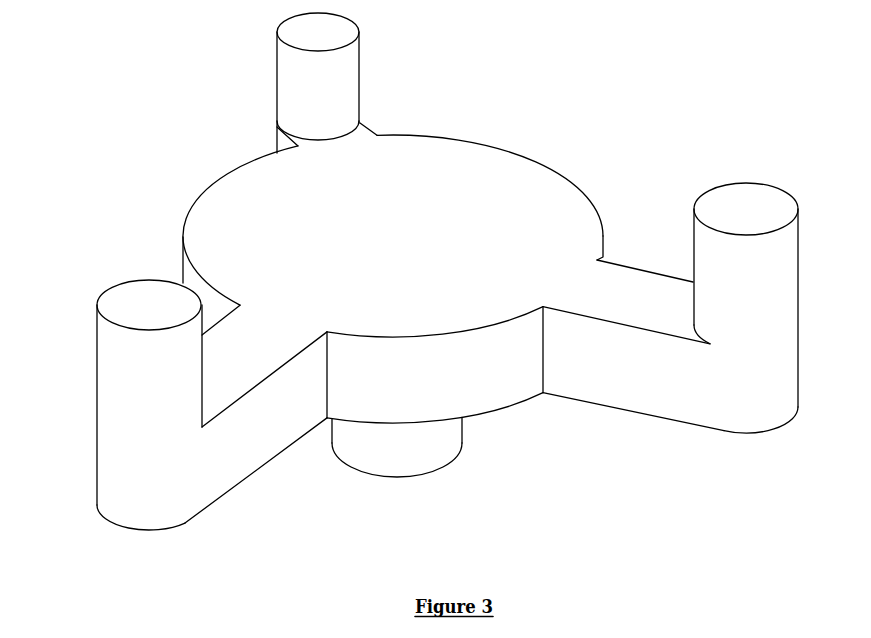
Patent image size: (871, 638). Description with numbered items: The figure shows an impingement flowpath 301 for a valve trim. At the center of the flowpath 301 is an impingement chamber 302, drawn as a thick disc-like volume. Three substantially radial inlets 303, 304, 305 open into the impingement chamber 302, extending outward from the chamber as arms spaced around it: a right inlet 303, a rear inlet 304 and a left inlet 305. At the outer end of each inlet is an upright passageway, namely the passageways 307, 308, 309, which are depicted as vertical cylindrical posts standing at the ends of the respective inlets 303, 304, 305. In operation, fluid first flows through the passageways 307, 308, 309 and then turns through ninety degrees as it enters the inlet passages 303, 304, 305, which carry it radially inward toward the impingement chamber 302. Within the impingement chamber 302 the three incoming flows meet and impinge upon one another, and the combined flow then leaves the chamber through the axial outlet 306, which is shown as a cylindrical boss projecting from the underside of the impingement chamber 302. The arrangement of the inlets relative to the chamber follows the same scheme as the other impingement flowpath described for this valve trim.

The flowpath 301 is at (596, 66).
The impingement chamber 302 is at (240, 210).
The radial inlet 303 is at (640, 280).
The radial inlet 304 is at (371, 115).
The radial inlet 305 is at (241, 466).
The axial outlet 306 is at (436, 459).
The passageway 307 is at (772, 267).
The passageway 308 is at (288, 91).
The passageway 309 is at (140, 363).